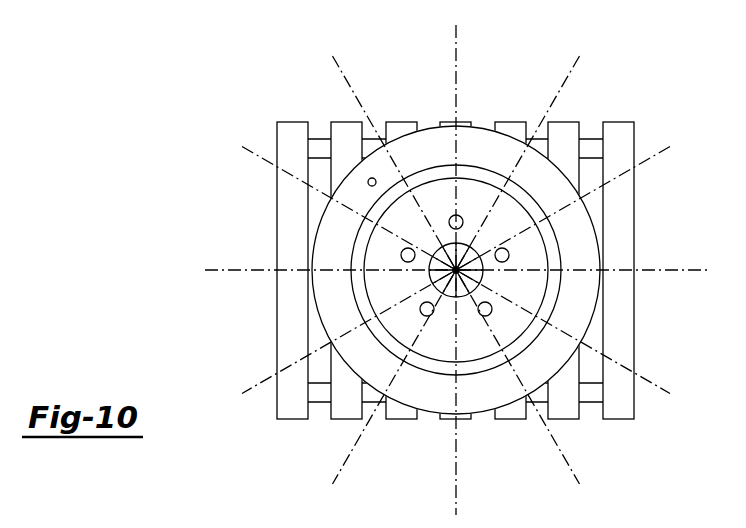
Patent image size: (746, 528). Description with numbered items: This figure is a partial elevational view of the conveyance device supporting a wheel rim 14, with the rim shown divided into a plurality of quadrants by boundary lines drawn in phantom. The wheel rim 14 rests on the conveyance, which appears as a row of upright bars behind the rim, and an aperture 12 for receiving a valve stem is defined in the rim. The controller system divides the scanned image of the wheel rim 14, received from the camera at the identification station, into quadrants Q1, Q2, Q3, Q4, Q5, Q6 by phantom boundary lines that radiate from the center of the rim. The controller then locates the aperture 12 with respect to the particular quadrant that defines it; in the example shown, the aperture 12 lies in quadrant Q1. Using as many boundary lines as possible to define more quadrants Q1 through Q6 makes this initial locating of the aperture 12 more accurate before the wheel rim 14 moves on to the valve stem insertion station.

The aperture 12 is at (370, 186).
The wheel rim 14 is at (323, 247).
The quadrant Q1 is at (258, 155).
The quadrant Q2 is at (347, 80).
The quadrant Q3 is at (458, 75).
The quadrant Q4 is at (572, 82).
The quadrant Q5 is at (660, 156).
The quadrant Q6 is at (697, 272).